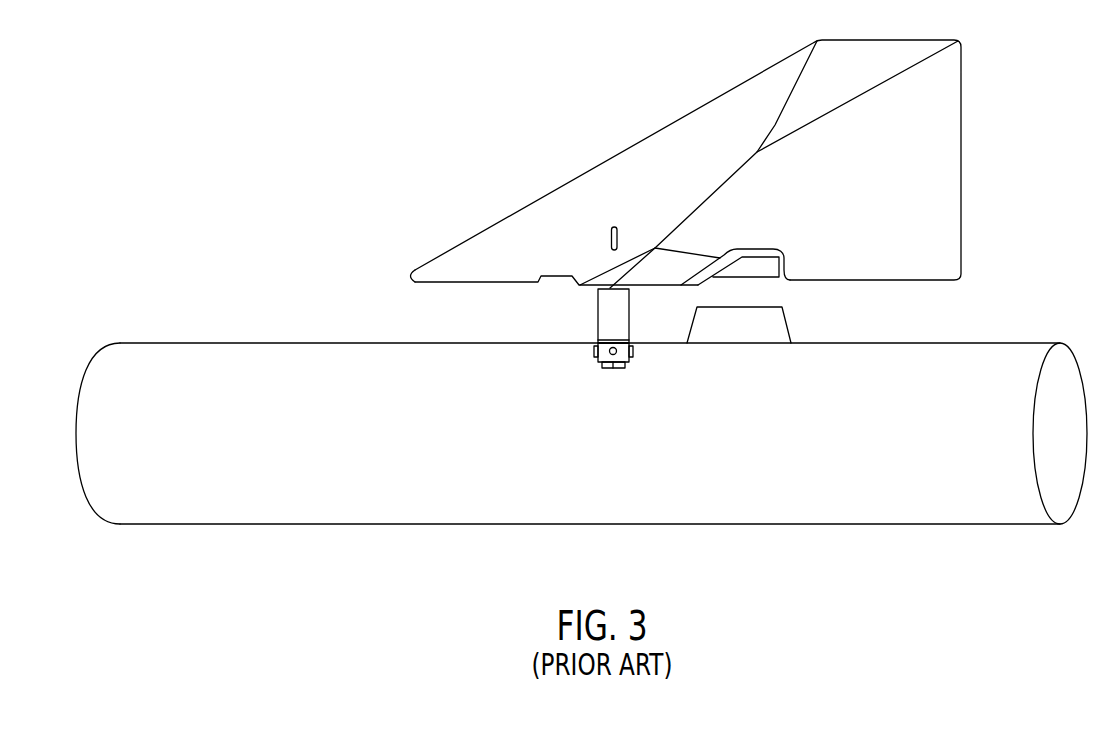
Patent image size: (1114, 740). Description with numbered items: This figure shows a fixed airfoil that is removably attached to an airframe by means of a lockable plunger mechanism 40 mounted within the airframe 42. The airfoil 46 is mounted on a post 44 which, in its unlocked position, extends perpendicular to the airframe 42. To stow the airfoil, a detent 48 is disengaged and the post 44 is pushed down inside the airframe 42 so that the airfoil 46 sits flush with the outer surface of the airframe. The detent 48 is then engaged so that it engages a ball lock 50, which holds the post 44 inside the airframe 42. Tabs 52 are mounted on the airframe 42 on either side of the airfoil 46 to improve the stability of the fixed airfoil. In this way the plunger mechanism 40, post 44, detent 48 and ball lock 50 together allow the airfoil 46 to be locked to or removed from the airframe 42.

The plunger mechanism 40 is at (436, 311).
The airframe 42 is at (210, 342).
The post 44 is at (598, 313).
The airfoil 46 is at (643, 118).
The detent 48 is at (610, 236).
The ball lock 50 is at (607, 368).
The tabs 52 is at (787, 323).